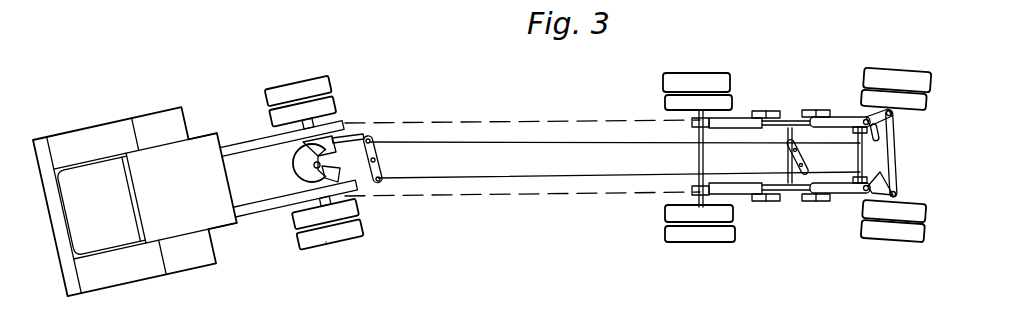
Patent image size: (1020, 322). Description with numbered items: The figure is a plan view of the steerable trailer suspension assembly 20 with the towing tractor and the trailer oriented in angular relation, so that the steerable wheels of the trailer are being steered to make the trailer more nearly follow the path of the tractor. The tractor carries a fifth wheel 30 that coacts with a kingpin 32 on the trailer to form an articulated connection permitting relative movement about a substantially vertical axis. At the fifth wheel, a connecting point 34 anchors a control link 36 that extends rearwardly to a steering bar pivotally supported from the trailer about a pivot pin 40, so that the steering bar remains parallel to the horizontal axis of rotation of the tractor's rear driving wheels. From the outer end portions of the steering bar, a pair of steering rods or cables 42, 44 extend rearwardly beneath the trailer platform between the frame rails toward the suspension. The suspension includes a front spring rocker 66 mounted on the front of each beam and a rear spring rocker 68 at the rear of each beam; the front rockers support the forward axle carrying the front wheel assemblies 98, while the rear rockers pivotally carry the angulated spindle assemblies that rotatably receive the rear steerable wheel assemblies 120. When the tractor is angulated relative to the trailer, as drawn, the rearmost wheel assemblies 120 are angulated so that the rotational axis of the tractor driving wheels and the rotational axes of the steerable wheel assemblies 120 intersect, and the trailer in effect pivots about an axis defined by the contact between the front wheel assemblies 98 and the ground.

The steerable trailer suspension assembly 20 is at (638, 135).
The fifth wheel 30 is at (305, 174).
The kingpin 32 is at (340, 168).
The connecting point 34 is at (298, 156).
The control link 36 is at (362, 136).
The pivot pin 40 is at (380, 156).
The steering rod or cable 42 is at (502, 144).
The steering rod or cable 44 is at (520, 178).
The front spring rocker 66 is at (744, 194).
The rear spring rocker 68 is at (847, 193).
The front wheel assemblies 98 is at (683, 80).
The steerable wheel assemblies 120 is at (885, 72).